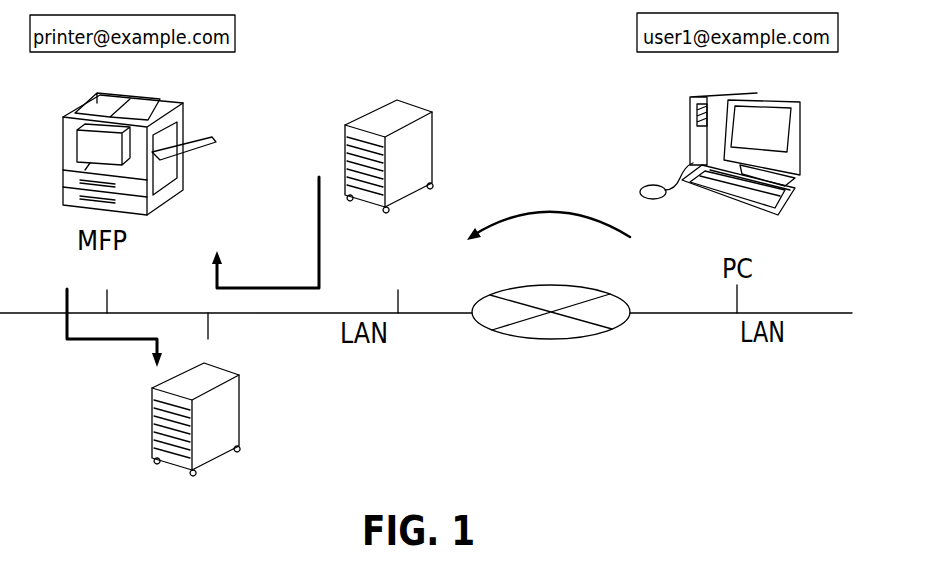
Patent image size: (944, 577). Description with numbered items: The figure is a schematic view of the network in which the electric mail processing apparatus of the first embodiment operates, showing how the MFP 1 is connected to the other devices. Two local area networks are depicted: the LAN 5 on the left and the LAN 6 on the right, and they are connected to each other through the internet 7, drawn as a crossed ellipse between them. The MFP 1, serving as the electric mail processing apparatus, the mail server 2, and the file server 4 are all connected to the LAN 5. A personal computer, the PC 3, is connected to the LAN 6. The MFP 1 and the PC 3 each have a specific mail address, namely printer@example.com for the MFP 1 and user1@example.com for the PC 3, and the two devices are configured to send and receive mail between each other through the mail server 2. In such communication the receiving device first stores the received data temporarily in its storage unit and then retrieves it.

The MFP 1 is at (183, 115).
The mail server 2 is at (433, 120).
The personal computer 3 is at (804, 112).
The file server 4 is at (241, 428).
The LAN 5 is at (293, 313).
The LAN 6 is at (687, 313).
The internet 7 is at (515, 339).